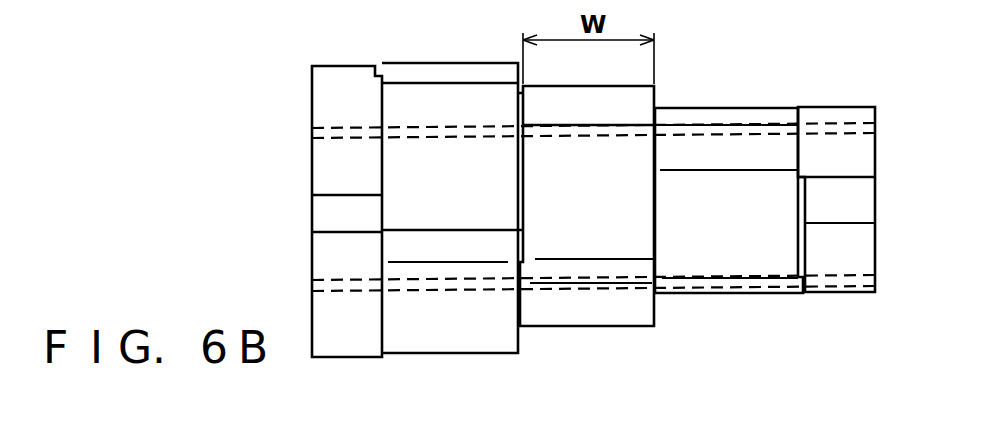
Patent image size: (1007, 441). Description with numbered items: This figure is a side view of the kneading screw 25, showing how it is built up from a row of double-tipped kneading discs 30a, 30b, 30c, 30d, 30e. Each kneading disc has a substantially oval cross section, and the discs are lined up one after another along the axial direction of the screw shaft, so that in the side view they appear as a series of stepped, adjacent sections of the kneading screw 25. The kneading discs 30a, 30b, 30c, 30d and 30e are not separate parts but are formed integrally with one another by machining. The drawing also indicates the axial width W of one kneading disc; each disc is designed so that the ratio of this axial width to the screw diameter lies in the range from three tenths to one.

The kneading screw 25 is at (737, 95).
The kneading disc 30a is at (342, 78).
The kneading disc 30b is at (452, 343).
The kneading disc 30c is at (590, 312).
The kneading disc 30d is at (727, 288).
The kneading disc 30e is at (840, 294).